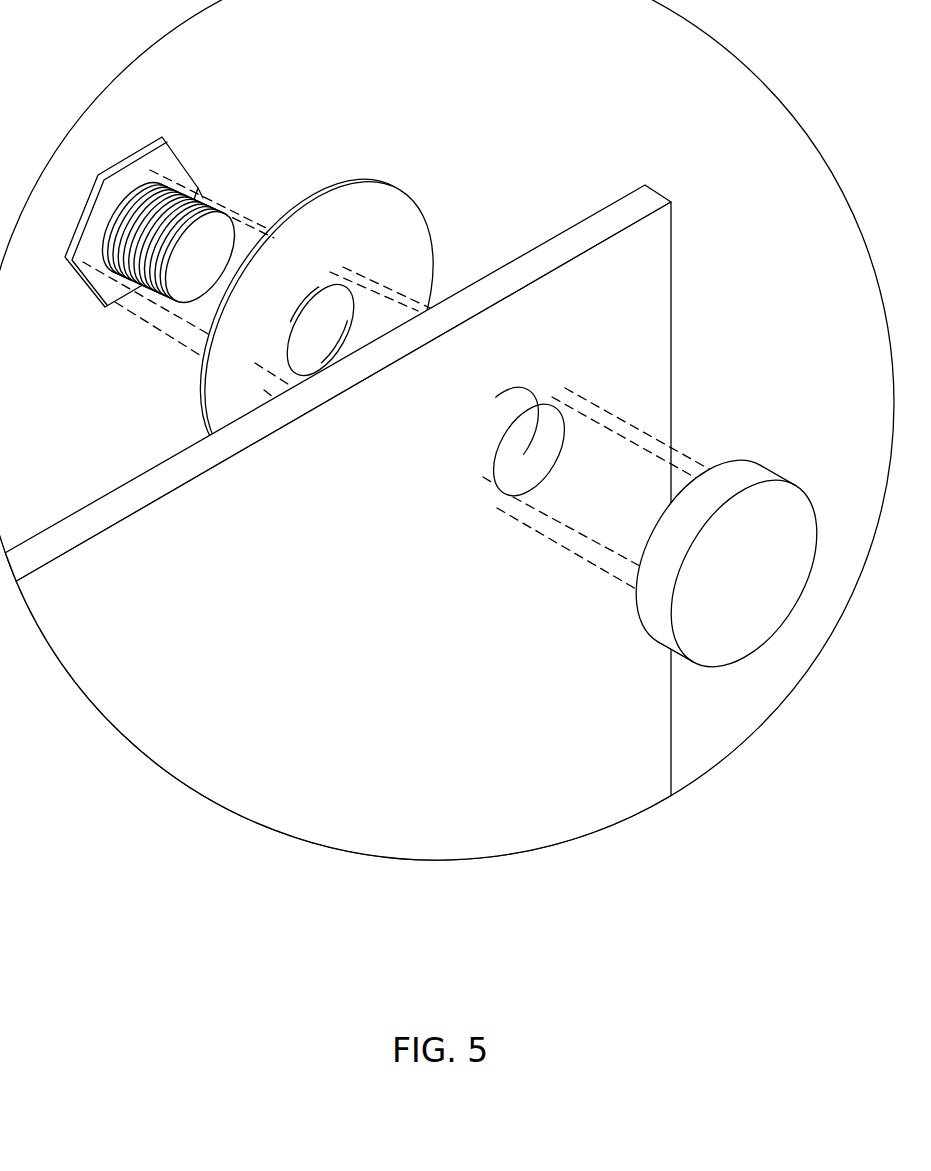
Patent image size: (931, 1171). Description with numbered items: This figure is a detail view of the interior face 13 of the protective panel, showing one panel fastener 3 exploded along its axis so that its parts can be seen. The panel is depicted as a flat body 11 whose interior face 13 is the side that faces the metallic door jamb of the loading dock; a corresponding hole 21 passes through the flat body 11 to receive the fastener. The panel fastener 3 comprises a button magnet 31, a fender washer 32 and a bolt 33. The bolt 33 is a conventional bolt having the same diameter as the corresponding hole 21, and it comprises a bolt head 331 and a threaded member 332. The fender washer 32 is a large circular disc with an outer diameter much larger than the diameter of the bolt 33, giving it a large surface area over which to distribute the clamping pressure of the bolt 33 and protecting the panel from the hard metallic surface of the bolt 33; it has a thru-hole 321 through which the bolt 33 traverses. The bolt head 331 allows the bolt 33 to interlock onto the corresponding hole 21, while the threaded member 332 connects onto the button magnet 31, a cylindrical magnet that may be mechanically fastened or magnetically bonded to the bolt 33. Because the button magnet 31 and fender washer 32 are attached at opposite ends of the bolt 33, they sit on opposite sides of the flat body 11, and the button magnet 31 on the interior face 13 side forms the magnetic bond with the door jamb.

The panel fastener 3 is at (258, 298).
The flat body 11 is at (338, 512).
The interior face 13 is at (534, 637).
The corresponding hole 21 is at (519, 442).
The button magnet 31 is at (766, 478).
The fender washer 32 is at (320, 327).
The thru-hole 321 is at (321, 332).
The bolt 33 is at (142, 220).
The bolt head 331 is at (104, 303).
The threaded member 332 is at (202, 203).